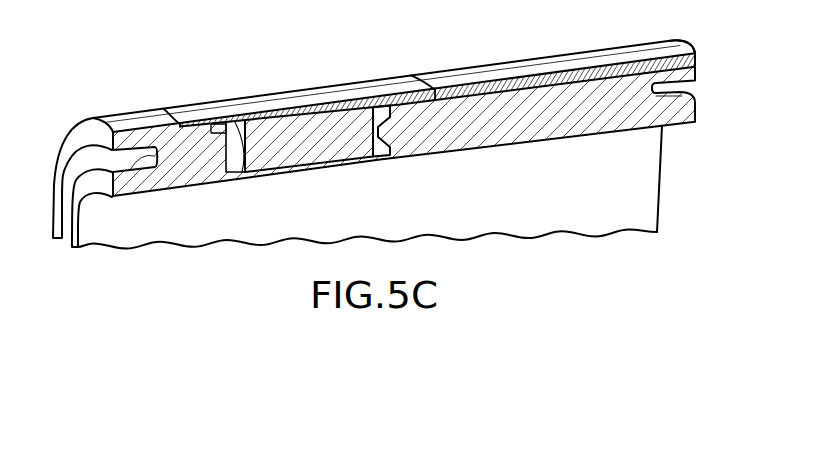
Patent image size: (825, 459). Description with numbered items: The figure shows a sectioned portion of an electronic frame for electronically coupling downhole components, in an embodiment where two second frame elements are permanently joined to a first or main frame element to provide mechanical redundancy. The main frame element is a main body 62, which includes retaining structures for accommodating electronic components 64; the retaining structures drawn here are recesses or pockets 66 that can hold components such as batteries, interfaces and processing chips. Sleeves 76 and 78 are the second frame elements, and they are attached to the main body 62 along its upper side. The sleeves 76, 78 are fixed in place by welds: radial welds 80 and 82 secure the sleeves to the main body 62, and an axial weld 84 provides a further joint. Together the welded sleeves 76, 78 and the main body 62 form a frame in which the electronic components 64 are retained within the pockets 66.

The main body 62 is at (615, 119).
The electronic components 64 is at (311, 131).
The recesses or pockets 66 is at (378, 103).
The sleeve 76 is at (259, 96).
The sleeve 78 is at (539, 67).
The radial weld 80 is at (186, 127).
The radial weld 82 is at (440, 97).
The axial weld 84 is at (699, 73).